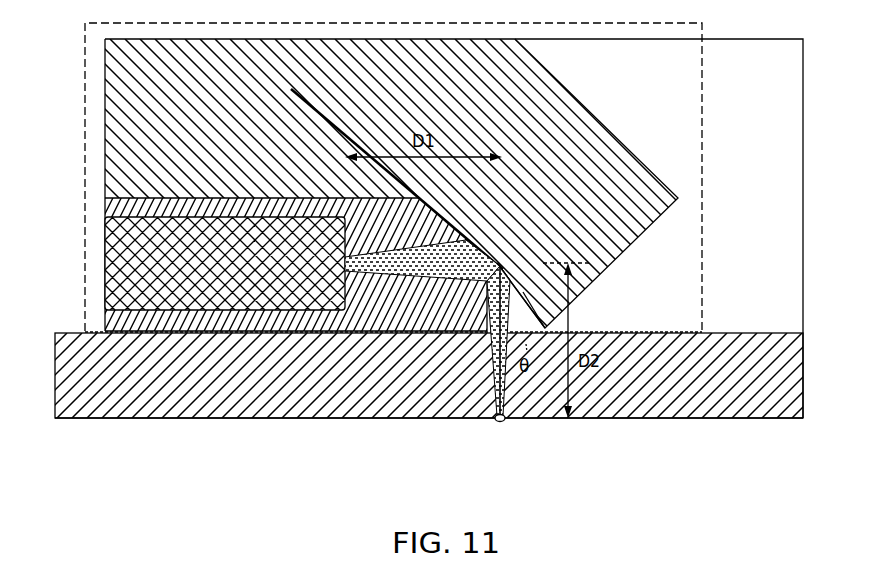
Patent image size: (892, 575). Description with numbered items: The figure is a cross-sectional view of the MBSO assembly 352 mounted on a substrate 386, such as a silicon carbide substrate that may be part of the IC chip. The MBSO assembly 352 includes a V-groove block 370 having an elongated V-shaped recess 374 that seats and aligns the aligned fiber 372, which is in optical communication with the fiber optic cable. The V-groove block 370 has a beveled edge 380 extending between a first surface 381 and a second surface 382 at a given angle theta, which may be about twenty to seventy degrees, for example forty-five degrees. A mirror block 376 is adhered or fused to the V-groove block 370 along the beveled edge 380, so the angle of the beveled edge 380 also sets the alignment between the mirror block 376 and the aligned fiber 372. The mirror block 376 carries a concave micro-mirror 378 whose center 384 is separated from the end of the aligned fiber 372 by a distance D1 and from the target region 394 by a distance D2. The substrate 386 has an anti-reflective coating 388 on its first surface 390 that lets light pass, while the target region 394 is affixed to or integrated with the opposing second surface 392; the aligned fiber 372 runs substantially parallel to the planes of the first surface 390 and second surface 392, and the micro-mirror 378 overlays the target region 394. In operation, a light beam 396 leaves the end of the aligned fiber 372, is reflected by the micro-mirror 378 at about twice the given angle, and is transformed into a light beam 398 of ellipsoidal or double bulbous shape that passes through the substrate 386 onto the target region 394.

The MBSO assembly 352 is at (85, 178).
The V-groove block 370 is at (242, 146).
The aligned fiber 372 is at (282, 271).
The elongated V-shaped recess 374 is at (397, 315).
The mirror block 376 is at (572, 146).
The micro-mirror 378 is at (505, 261).
The beveled edge 380 is at (292, 90).
The first surface 381 is at (105, 103).
The second surface 382 is at (147, 333).
The center of the micro-mirror 384 is at (508, 262).
The substrate 386 is at (472, 388).
The anti-reflective coating 388 is at (630, 324).
The first surface of the substrate 390 is at (803, 335).
The second surface of the substrate 392 is at (737, 419).
The target region 394 is at (502, 422).
The light beam 396 is at (436, 250).
The light beam 398 is at (488, 300).